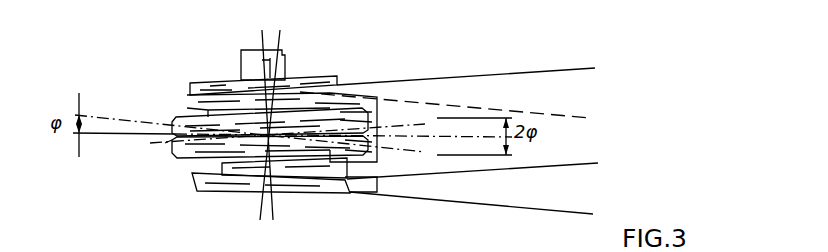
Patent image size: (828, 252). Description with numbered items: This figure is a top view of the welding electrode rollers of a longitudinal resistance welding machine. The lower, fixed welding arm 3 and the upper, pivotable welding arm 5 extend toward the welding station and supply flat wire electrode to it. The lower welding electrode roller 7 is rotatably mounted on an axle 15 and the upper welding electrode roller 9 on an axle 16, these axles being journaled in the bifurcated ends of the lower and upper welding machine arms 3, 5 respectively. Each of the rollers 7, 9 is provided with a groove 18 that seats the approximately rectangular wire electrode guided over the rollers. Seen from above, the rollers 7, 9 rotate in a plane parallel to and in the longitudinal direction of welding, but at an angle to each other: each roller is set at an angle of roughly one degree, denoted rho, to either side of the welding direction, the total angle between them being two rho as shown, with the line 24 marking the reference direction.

The lower welding arm 3 is at (437, 184).
The upper welding arm 5 is at (490, 92).
The lower welding electrode roller 7 is at (325, 163).
The upper welding electrode roller 9 is at (182, 156).
The axle 15 is at (277, 170).
The axle 16 is at (235, 166).
The groove 18 is at (173, 140).
The central axis 24 is at (108, 133).